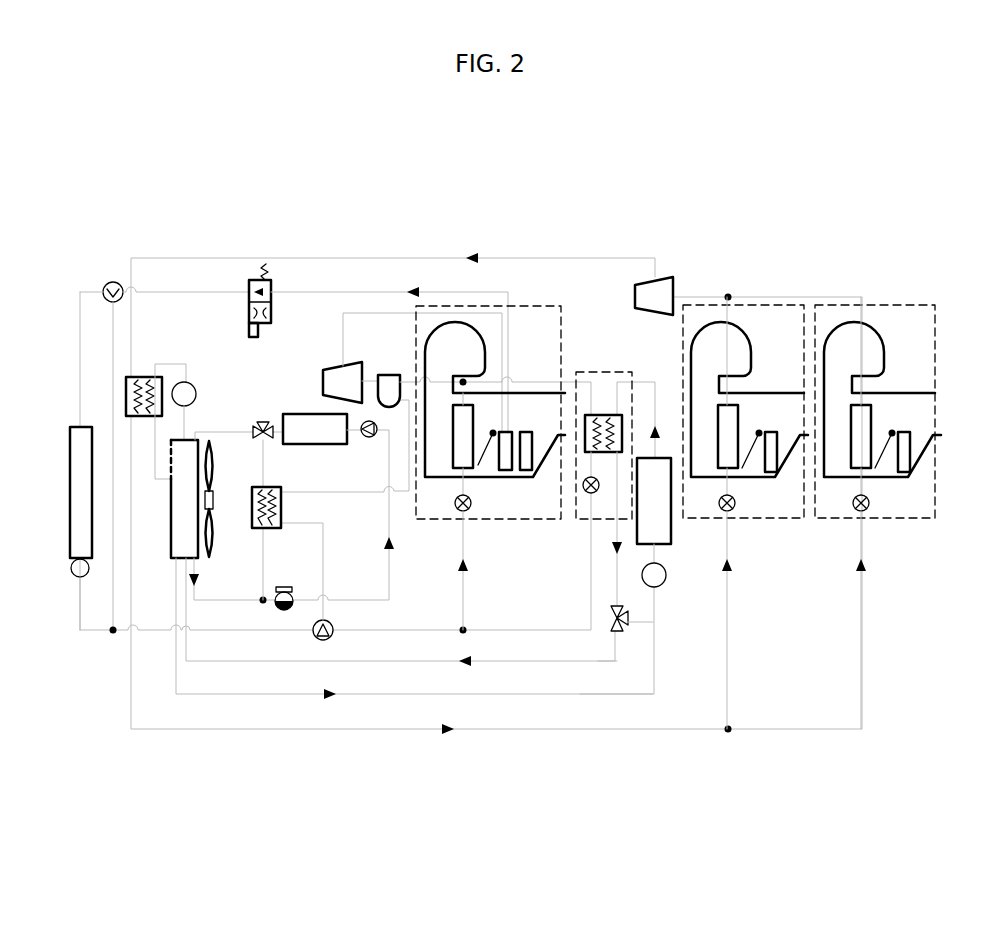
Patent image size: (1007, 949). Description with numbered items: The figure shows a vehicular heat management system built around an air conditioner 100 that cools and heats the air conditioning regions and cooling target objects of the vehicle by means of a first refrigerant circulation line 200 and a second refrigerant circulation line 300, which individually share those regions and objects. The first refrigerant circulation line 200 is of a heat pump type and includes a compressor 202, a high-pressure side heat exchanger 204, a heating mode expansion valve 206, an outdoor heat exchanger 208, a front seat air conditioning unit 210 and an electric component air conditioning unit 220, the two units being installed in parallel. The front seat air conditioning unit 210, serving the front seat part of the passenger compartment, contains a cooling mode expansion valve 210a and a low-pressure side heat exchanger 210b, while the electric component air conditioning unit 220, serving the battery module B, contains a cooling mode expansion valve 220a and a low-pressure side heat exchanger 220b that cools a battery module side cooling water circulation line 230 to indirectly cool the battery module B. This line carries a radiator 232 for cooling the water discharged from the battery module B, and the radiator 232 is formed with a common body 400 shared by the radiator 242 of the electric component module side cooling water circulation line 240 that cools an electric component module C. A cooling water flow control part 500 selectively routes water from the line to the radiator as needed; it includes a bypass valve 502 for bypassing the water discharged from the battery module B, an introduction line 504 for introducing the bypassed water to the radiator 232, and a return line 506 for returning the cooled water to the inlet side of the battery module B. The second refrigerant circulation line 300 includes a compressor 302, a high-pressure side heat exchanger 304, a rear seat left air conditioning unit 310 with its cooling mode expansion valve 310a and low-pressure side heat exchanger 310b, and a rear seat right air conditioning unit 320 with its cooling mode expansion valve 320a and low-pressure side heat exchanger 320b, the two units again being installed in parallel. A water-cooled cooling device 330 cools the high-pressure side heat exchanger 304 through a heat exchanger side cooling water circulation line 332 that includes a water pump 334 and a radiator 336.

The air conditioner 100 is at (445, 250).
The first refrigerant circulation line 200 is at (356, 283).
The compressor 202 is at (327, 368).
The high-pressure side heat exchanger 204 is at (512, 430).
The heating mode expansion valve 206 is at (257, 266).
The outdoor heat exchanger 208 is at (70, 445).
The front seat air conditioning unit 210 is at (492, 499).
The cooling mode expansion valve 210a is at (460, 515).
The low-pressure side heat exchanger 210b is at (470, 472).
The electric component air conditioning unit 220 is at (559, 524).
The cooling mode expansion valve 220a is at (586, 493).
The low-pressure side heat exchanger 220b is at (603, 453).
The battery module side cooling water circulation line 230 is at (617, 595).
The radiator 232 is at (170, 558).
The electric component module side cooling water circulation line 240 is at (389, 577).
The radiator 242 is at (205, 558).
The second refrigerant circulation line 300 is at (692, 244).
The compressor 302 is at (663, 279).
The high-pressure side heat exchanger 304 is at (145, 377).
The rear seat left air conditioning unit 310 is at (773, 509).
The cooling mode expansion valve 310a is at (720, 512).
The low-pressure side heat exchanger 310b is at (735, 470).
The rear seat right air conditioning unit 320 is at (881, 469).
The cooling mode expansion valve 320a is at (868, 510).
The low-pressure side heat exchanger 320b is at (866, 470).
The water-cooled cooling device 330 is at (137, 290).
The heat exchanger side cooling water circulation line 332 is at (163, 350).
The water pump 334 is at (178, 364).
The radiator 336 is at (185, 440).
The common body 400 is at (158, 533).
The cooling water flow control part 500 is at (639, 773).
The bypass valve 502 is at (622, 632).
The introduction line 504 is at (597, 663).
The return line 506 is at (580, 694).
The battery module B is at (673, 543).
The electric component module C is at (298, 413).